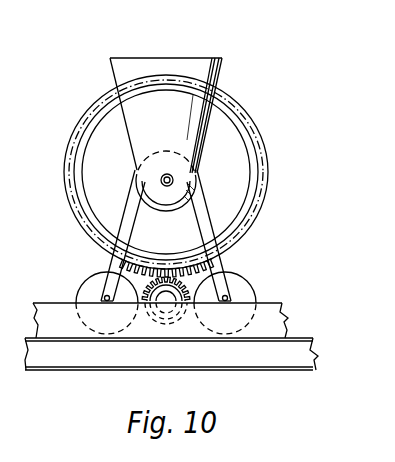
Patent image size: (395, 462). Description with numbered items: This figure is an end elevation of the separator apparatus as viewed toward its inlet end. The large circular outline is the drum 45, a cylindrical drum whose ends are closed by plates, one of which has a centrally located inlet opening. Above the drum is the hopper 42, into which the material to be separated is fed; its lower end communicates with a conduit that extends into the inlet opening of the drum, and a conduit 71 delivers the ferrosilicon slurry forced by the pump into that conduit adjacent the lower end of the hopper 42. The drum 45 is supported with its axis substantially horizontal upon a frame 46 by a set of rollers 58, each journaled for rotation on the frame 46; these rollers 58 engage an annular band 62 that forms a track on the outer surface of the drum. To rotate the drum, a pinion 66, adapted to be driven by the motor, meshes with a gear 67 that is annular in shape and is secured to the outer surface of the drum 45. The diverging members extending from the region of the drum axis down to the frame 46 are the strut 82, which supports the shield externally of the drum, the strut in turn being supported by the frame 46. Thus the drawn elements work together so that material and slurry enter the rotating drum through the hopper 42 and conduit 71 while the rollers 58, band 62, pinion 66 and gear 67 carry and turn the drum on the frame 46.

The hopper 42 is at (223, 70).
The drum 45 is at (260, 152).
The annular band 62 is at (191, 172).
The conduit 71 is at (161, 178).
The strut 82 is at (127, 205).
The gear 67 is at (192, 277).
The rollers 58 is at (85, 283).
The pinion 66 is at (142, 312).
The frame 46 is at (273, 362).